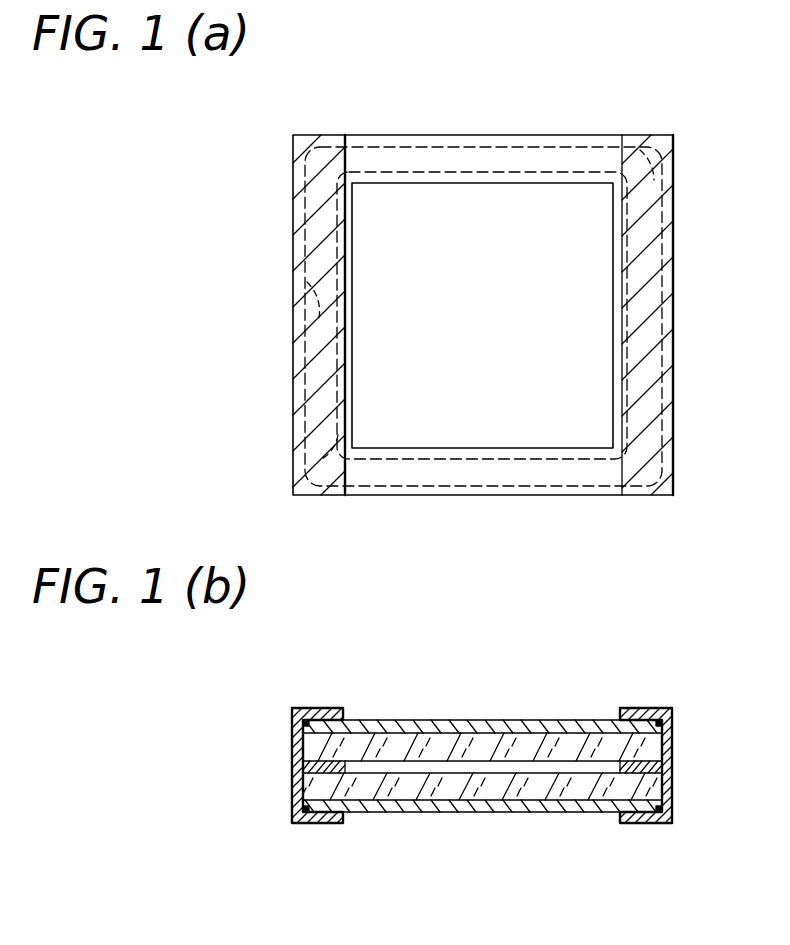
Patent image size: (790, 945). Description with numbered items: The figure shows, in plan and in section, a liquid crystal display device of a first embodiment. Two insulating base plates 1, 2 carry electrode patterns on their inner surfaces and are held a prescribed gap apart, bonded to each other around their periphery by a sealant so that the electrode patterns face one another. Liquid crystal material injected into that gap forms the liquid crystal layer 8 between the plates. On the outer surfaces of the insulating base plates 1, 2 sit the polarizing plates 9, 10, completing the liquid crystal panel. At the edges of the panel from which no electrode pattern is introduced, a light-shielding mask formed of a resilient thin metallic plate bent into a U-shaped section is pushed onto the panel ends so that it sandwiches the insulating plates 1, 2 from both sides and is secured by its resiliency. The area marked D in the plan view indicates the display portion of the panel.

The insulating base plate 1 is at (425, 786).
The insulating base plate 2 is at (492, 745).
The liquid crystal layer 8 is at (543, 765).
The polarizing plate 9 is at (365, 812).
The polarizing plate 10 is at (402, 722).
The display portion D is at (585, 248).